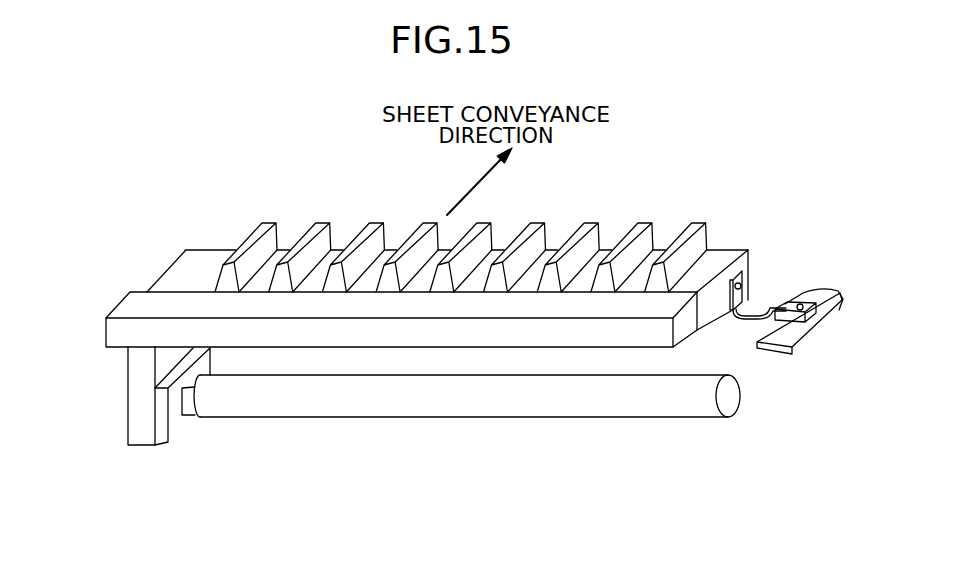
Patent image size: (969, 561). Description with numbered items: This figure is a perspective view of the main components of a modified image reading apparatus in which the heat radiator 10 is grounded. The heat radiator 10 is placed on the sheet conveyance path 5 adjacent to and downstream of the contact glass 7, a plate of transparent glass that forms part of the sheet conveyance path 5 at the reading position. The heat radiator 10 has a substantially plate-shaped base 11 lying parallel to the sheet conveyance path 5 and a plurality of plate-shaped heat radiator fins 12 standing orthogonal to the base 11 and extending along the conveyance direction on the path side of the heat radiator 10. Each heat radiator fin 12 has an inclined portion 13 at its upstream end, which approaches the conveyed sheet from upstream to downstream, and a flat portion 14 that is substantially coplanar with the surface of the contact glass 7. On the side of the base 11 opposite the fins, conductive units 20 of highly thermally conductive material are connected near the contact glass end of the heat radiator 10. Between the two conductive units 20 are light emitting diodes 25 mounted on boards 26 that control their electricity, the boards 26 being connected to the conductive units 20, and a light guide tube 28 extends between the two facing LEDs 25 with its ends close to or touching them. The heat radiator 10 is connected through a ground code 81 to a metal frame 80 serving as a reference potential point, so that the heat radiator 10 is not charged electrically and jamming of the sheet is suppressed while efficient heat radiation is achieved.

The sheet conveyance path 5 is at (133, 308).
The contact glass 7 is at (105, 337).
The heat radiator 10 is at (171, 265).
The base 11 is at (733, 252).
The heat radiator fin 12 is at (690, 223).
The inclined portion 13 is at (228, 277).
The flat portion 14 is at (263, 228).
The conductive unit 20 is at (128, 412).
The light emitting diode 25 is at (196, 419).
The board 26 is at (190, 417).
The light guide tube 28 is at (432, 418).
The metal frame 80 is at (814, 333).
The ground code 81 is at (758, 302).